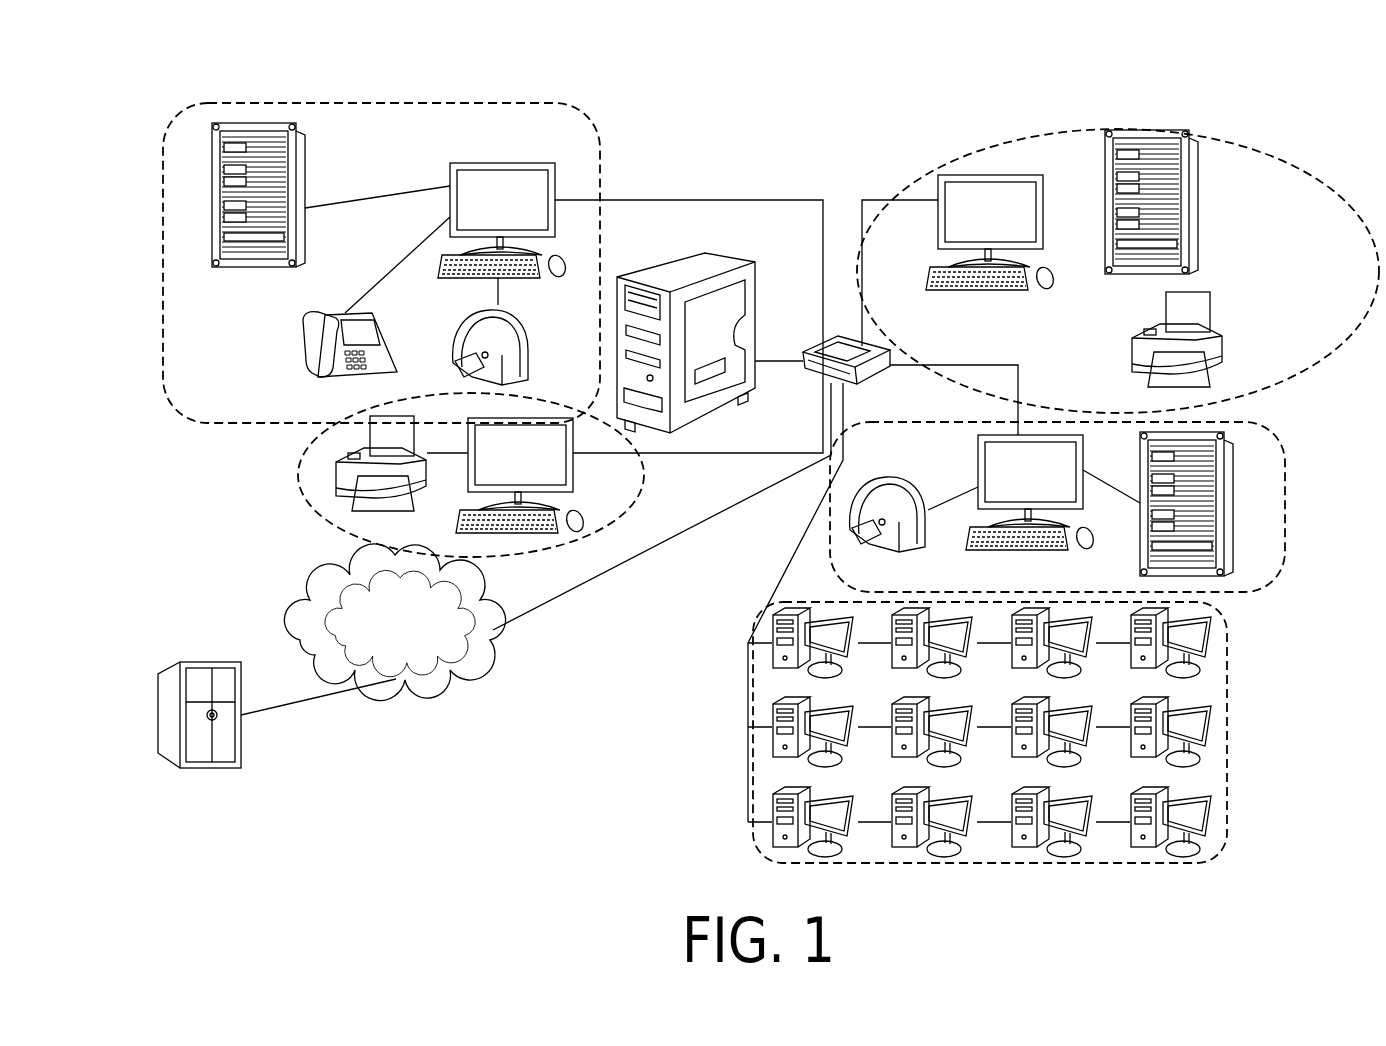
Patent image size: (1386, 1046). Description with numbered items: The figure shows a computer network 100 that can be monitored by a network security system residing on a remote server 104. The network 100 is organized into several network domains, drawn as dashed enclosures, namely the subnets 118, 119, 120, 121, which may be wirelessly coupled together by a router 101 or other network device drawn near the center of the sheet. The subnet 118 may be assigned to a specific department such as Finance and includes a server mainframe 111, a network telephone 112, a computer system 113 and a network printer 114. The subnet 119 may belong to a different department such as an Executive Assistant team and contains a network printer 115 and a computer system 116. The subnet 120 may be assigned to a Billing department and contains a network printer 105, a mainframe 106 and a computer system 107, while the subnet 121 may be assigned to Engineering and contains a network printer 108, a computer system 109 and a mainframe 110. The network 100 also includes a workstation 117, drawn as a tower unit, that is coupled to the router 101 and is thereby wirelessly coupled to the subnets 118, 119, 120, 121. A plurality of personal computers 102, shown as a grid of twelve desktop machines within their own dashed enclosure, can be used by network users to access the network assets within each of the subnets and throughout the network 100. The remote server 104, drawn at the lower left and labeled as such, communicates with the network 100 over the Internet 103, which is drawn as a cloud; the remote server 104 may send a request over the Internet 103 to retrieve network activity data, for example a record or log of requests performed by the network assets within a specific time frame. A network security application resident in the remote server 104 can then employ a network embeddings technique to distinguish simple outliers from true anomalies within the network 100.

The computer network 100 is at (156, 88).
The router 101 is at (870, 375).
The personal computers 102 is at (755, 700).
The Internet 103 is at (393, 671).
The remote server 104 is at (192, 660).
The network printer 105 is at (1225, 345).
The mainframe 106 is at (1200, 150).
The computer system 107 is at (1000, 175).
The network printer 108 is at (888, 548).
The computer system 109 is at (978, 465).
The mainframe 110 is at (1238, 503).
The server mainframe 111 is at (258, 268).
The network telephone 112 is at (300, 330).
The computer system 113 is at (498, 163).
The network printer 114 is at (518, 328).
The network printer 115 is at (332, 477).
The computer system 116 is at (573, 478).
The workstation 117 is at (735, 258).
The subnet 118 is at (320, 104).
The subnet 119 is at (396, 402).
The subnet 120 is at (1352, 212).
The subnet 121 is at (1100, 424).